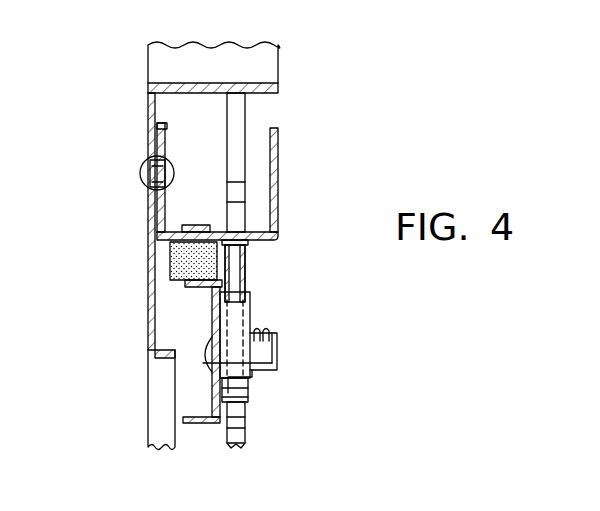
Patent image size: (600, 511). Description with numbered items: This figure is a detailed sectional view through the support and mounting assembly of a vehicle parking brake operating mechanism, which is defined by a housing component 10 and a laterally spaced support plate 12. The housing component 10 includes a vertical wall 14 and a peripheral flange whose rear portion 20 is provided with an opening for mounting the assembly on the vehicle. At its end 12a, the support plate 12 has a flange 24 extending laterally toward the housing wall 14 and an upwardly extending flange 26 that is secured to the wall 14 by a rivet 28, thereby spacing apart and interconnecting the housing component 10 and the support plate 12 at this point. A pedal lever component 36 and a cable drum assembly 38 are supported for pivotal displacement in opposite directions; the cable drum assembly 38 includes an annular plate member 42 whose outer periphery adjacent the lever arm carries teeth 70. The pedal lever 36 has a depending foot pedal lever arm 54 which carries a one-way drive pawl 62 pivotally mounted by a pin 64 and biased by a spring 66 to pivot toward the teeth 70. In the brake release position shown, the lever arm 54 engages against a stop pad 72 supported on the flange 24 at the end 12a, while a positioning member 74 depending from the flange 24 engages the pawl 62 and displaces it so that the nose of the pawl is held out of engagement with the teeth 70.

The housing component 10 is at (146, 62).
The support plate 12 is at (261, 168).
The end of support plate 12a is at (275, 167).
The vertical wall 14 is at (147, 113).
The rear portion 20 is at (266, 85).
The flange 24 is at (262, 232).
The upwardly extending flange 26 is at (155, 213).
The rivet 28 is at (140, 173).
The pedal lever component 36 is at (192, 428).
The cable drum assembly 38 is at (249, 447).
The annular plate member 42 is at (242, 196).
The foot pedal lever arm 54 is at (150, 390).
The one-way drive pawl 62 is at (252, 308).
The pin 64 is at (279, 337).
The spring 66 is at (270, 328).
The teeth 70 is at (279, 442).
The stop pad 72 is at (183, 262).
The positioning member 74 is at (245, 272).